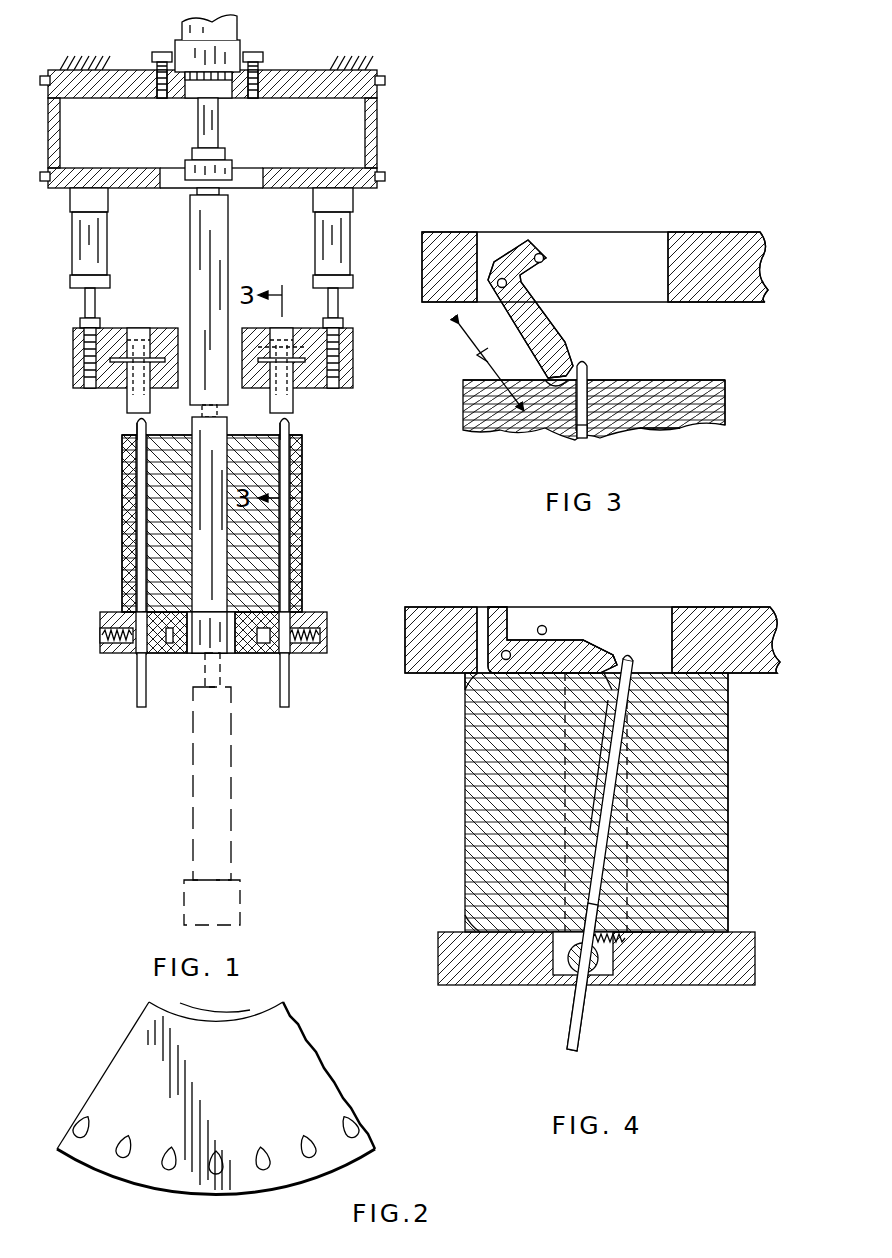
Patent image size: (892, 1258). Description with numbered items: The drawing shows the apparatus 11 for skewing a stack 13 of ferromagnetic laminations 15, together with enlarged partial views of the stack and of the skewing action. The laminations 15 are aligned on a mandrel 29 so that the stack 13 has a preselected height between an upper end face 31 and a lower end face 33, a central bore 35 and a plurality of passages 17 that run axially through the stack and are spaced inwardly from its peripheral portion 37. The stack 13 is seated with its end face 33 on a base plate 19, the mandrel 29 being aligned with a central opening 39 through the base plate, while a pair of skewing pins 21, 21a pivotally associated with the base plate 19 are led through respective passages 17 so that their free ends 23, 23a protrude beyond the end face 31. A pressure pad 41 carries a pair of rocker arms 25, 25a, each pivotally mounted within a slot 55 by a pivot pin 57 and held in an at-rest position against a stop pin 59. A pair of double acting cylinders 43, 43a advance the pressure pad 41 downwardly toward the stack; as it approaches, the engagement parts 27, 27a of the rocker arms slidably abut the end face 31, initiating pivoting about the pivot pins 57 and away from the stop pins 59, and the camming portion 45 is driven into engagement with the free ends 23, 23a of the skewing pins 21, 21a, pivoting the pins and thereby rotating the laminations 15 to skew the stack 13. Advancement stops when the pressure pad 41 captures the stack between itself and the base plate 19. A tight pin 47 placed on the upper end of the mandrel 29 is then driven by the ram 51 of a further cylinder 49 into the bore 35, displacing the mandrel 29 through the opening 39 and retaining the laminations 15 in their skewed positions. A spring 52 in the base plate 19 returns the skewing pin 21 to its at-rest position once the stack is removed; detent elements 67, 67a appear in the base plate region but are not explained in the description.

In FIG. 1, the apparatus 11 is at (400, 102).
In FIG. 1, the stack 13 is at (312, 524).
In FIG. 3, the stack 13 is at (722, 443).
In FIG. 4, the stack 13 is at (732, 730).
In FIG. 2, the stack 13 is at (80, 1082).
In FIG. 1, the laminations 15 is at (302, 588).
In FIG. 3, the laminations 15 is at (463, 406).
In FIG. 4, the laminations 15 is at (465, 834).
In FIG. 2, the laminations 15 is at (338, 1104).
In FIG. 1, the passages 17 is at (136, 532).
In FIG. 3, the passages 17 is at (589, 398).
In FIG. 4, the passages 17 is at (600, 862).
In FIG. 2, the passages 17 is at (206, 1177).
In FIG. 1, the base plate 19 is at (100, 646).
In FIG. 4, the base plate 19 is at (756, 957).
In FIG. 1, the skewing pin 21 is at (290, 698).
In FIG. 3, the skewing pin 21 is at (580, 438).
In FIG. 4, the skewing pin 21 is at (614, 804).
In FIG. 1, the skewing pin 21a is at (137, 698).
In FIG. 1, the free end 23 is at (290, 436).
In FIG. 3, the free end 23 is at (589, 367).
In FIG. 4, the free end 23 is at (628, 652).
In FIG. 1, the free end 23a is at (132, 436).
In FIG. 1, the rocker arm 25 is at (290, 401).
In FIG. 3, the rocker arm 25 is at (502, 252).
In FIG. 4, the rocker arm 25 is at (486, 603).
In FIG. 1, the rocker arm 25a is at (130, 398).
In FIG. 1, the engagement part 27 is at (288, 426).
In FIG. 3, the engagement part 27 is at (560, 386).
In FIG. 4, the engagement part 27 is at (615, 678).
In FIG. 1, the engagement part 27a is at (136, 424).
In FIG. 1, the mandrel 29 is at (206, 498).
In FIG. 1, the end face 31 is at (296, 440).
In FIG. 3, the end face 31 is at (688, 380).
In FIG. 4, the end face 31 is at (466, 690).
In FIG. 2, the end face 31 is at (303, 1068).
In FIG. 1, the end face 33 is at (124, 600).
In FIG. 4, the end face 33 is at (466, 925).
In FIG. 3, the bore 35 is at (628, 432).
In FIG. 4, the bore 35 is at (632, 930).
In FIG. 2, the bore 35 is at (222, 1022).
In FIG. 1, the peripheral portion 37 is at (122, 488).
In FIG. 3, the peripheral portion 37 is at (726, 402).
In FIG. 4, the peripheral portion 37 is at (728, 905).
In FIG. 2, the peripheral portion 37 is at (110, 1178).
In FIG. 1, the central opening 39 is at (186, 660).
In FIG. 1, the pressure pad 41 is at (75, 352).
In FIG. 3, the pressure pad 41 is at (766, 248).
In FIG. 4, the pressure pad 41 is at (780, 612).
In FIG. 1, the cylinder 43 is at (348, 250).
In FIG. 1, the cylinder 43a is at (98, 252).
In FIG. 3, the camming portion 45 is at (568, 364).
In FIG. 4, the camming portion 45 is at (612, 654).
In FIG. 1, the tight pin 47 is at (208, 262).
In FIG. 1, the cylinder 49 is at (238, 30).
In FIG. 1, the ram 51 is at (220, 135).
In FIG. 4, the spring 52 is at (604, 932).
In FIG. 3, the slot 55 is at (668, 262).
In FIG. 4, the slot 55 is at (672, 628).
In FIG. 3, the pivot pin 57 is at (500, 288).
In FIG. 4, the pivot pin 57 is at (506, 661).
In FIG. 3, the stop pin 59 is at (545, 256).
In FIG. 4, the stop pin 59 is at (542, 625).
In FIG. 1, the detent ball 67 is at (262, 645).
In FIG. 4, the detent ball 67 is at (573, 966).
In FIG. 1, the detent ball 67a is at (163, 642).